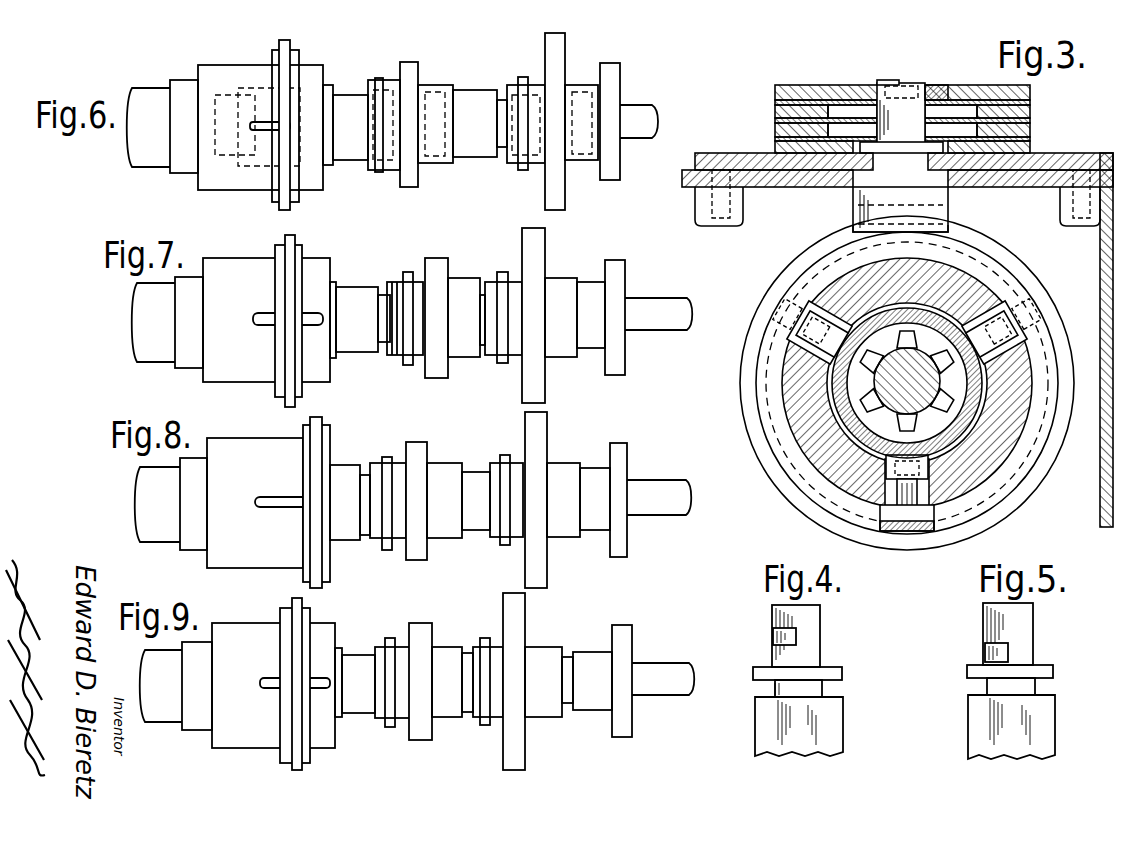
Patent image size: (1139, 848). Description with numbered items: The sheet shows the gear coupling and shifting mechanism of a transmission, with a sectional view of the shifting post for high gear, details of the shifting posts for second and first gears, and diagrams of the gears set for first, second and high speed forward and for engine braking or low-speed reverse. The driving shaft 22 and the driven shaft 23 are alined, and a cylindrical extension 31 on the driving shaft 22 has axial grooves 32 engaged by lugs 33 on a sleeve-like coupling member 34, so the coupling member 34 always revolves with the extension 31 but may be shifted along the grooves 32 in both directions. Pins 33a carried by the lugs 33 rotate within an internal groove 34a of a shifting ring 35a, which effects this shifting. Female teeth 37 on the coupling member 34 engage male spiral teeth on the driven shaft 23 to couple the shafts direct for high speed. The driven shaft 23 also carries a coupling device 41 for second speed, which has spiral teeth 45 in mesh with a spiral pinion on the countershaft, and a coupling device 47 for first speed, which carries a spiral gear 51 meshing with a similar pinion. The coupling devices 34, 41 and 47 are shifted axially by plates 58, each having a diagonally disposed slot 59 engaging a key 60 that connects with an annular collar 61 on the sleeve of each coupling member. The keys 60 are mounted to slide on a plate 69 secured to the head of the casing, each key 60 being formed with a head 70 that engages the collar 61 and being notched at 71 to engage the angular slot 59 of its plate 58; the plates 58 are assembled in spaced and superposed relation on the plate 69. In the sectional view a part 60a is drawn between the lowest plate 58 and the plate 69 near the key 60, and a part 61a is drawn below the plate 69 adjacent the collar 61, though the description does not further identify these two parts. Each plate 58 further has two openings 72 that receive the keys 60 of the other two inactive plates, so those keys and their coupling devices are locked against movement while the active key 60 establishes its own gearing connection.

In FIG. 6, the driving shaft 22 is at (158, 97).
In FIG. 6, the driven shaft 23 is at (642, 106).
In FIG. 3, the driven shaft 23 is at (887, 382).
In FIG. 6, the cylindrical extension 31 is at (234, 74).
In FIG. 7, the cylindrical extension 31 is at (244, 265).
In FIG. 8, the cylindrical extension 31 is at (245, 443).
In FIG. 9, the cylindrical extension 31 is at (243, 628).
In FIG. 3, the cylindrical extension 31 is at (995, 434).
In FIG. 3, the axial grooves 32 is at (883, 467).
In FIG. 3, the lugs 33 is at (930, 472).
In FIG. 3, the pins 33a is at (909, 507).
In FIG. 6, the coupling member 34 is at (328, 92).
In FIG. 7, the coupling member 34 is at (335, 285).
In FIG. 8, the coupling member 34 is at (350, 466).
In FIG. 9, the coupling member 34 is at (346, 652).
In FIG. 3, the coupling member 34 is at (933, 302).
In FIG. 3, the internal groove 34a is at (928, 512).
In FIG. 6, the shifting ring 35a is at (296, 58).
In FIG. 3, the female teeth 37 is at (857, 375).
In FIG. 6, the coupling device 41 is at (447, 91).
In FIG. 7, the coupling device 41 is at (467, 282).
In FIG. 8, the coupling device 41 is at (451, 470).
In FIG. 9, the coupling device 41 is at (450, 652).
In FIG. 6, the spiral teeth 45 is at (409, 63).
In FIG. 7, the spiral teeth 45 is at (440, 259).
In FIG. 8, the spiral teeth 45 is at (423, 444).
In FIG. 9, the spiral teeth 45 is at (419, 624).
In FIG. 6, the coupling device 47 is at (584, 86).
In FIG. 7, the coupling device 47 is at (563, 283).
In FIG. 8, the coupling device 47 is at (570, 465).
In FIG. 9, the coupling device 47 is at (548, 652).
In FIG. 6, the spiral gear 51 is at (554, 40).
In FIG. 7, the spiral gear 51 is at (531, 236).
In FIG. 8, the spiral gear 51 is at (542, 432).
In FIG. 9, the spiral gear 51 is at (504, 598).
In FIG. 3, the plates 58 is at (775, 128).
In FIG. 3, the diagonally disposed slot 59 is at (944, 90).
In FIG. 3, the key 60 is at (901, 115).
In FIG. 4, the key 60 is at (830, 718).
In FIG. 5, the key 60 is at (977, 712).
In FIG. 3, the washer 60a is at (1030, 150).
In FIG. 6, the collar 61 is at (289, 46).
In FIG. 7, the collar 61 is at (290, 246).
In FIG. 8, the collar 61 is at (317, 425).
In FIG. 9, the collar 61 is at (296, 604).
In FIG. 3, the collar 61 is at (1003, 250).
In FIG. 3, the hub 61a is at (940, 206).
In FIG. 3, the plate 69 is at (1082, 160).
In FIG. 3, the head 70 is at (946, 222).
In FIG. 3, the notch 71 is at (888, 82).
In FIG. 4, the notch 71 is at (776, 636).
In FIG. 5, the notch 71 is at (986, 651).
In FIG. 3, the openings 72 is at (846, 130).